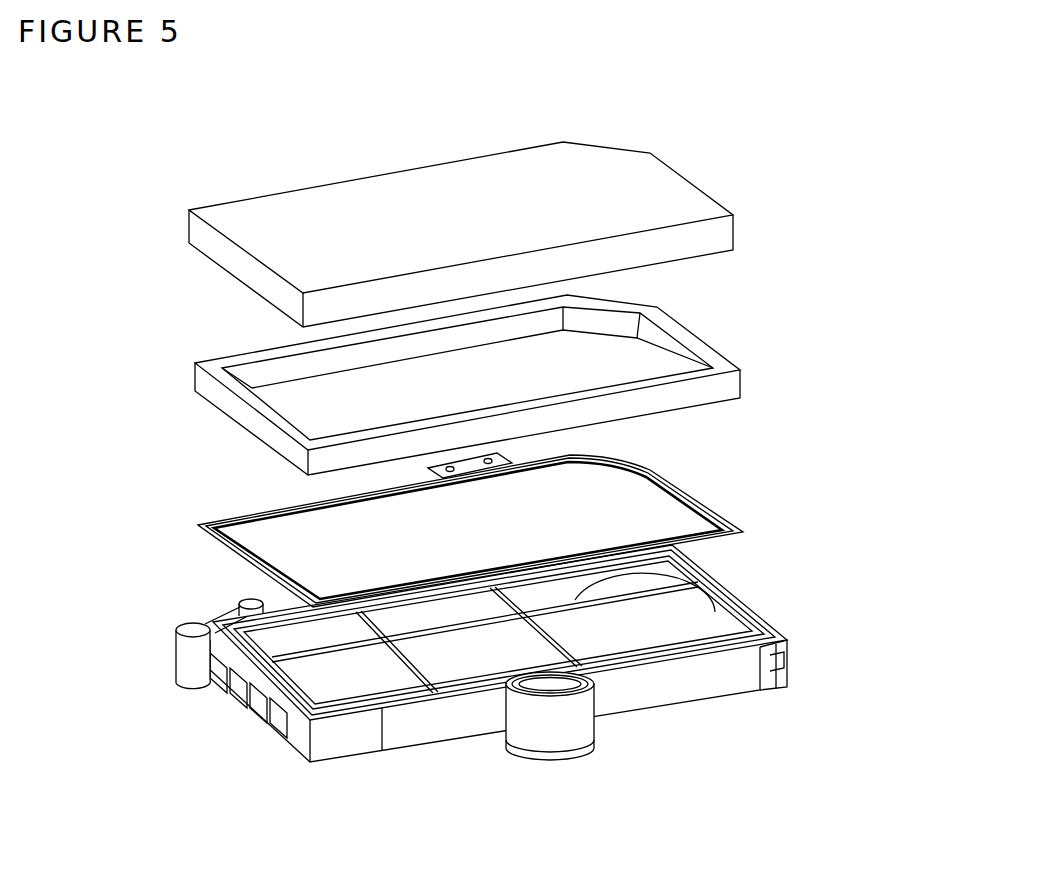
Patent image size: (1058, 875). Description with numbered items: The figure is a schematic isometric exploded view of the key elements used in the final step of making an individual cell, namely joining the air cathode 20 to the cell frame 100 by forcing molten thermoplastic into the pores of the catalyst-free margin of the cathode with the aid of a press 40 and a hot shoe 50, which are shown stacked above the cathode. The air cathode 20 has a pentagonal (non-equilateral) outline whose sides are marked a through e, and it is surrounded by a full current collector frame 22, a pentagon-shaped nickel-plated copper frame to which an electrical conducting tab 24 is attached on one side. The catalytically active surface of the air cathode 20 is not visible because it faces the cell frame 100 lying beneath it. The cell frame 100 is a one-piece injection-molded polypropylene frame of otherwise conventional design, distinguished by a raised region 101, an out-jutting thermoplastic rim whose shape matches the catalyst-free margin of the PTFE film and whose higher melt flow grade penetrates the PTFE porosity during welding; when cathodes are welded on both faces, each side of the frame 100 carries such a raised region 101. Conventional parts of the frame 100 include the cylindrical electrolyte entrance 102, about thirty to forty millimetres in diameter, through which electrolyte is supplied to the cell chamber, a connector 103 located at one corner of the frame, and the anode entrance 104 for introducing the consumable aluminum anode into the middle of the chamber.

The press 40 is at (736, 183).
The hot shoe 50 is at (730, 338).
The air cathode 20 is at (518, 529).
The current collector frame 22 is at (198, 516).
The electrical conducting tab 24 is at (424, 470).
The cell frame 100 is at (524, 699).
The raised region 101 is at (680, 652).
The electrolyte entrance 102 is at (558, 764).
The connector 103 is at (175, 676).
The anode entrance 104 is at (494, 641).